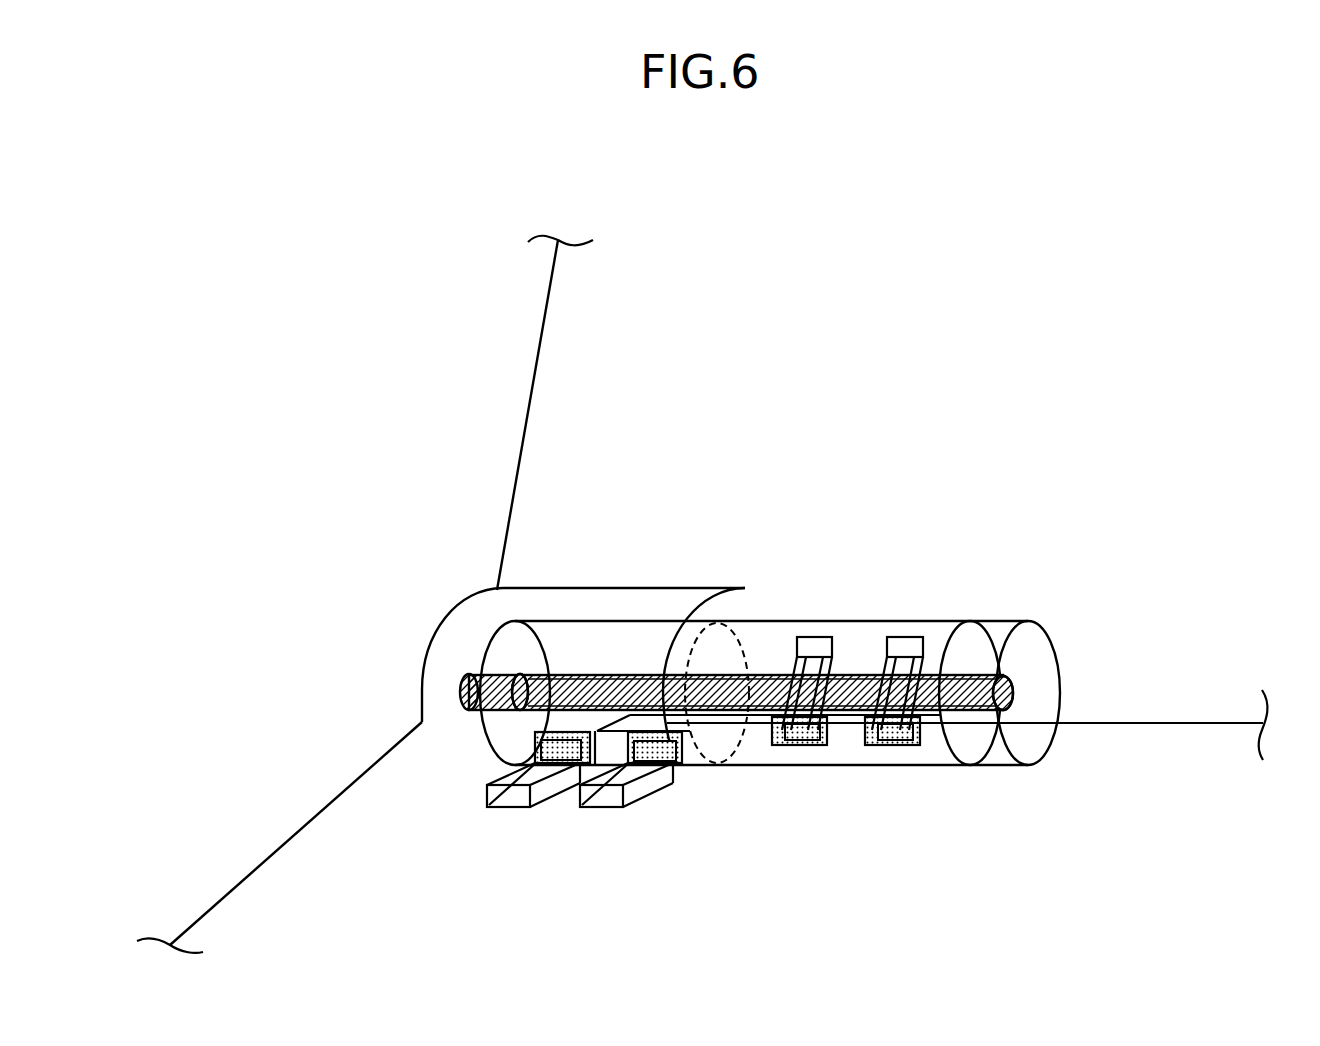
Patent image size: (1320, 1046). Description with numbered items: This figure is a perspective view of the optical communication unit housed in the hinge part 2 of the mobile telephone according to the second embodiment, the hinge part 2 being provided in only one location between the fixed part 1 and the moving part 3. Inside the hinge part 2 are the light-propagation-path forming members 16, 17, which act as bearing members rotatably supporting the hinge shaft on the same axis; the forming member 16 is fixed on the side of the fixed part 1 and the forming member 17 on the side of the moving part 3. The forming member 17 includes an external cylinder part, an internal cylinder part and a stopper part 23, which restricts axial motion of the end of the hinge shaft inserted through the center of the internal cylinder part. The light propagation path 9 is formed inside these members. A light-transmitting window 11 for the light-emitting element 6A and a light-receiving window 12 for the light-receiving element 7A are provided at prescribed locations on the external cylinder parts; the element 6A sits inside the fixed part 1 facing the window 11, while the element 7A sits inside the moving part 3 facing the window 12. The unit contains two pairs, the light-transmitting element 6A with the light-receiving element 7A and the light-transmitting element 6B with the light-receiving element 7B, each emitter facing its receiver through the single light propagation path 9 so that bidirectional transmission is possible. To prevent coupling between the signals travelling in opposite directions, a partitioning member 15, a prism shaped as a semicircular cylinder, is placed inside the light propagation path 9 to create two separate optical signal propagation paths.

The fixed part 1 is at (308, 855).
The hinge part 2 is at (400, 623).
The moving part 3 is at (565, 405).
The light-transmitting element 6A is at (598, 812).
The light-transmitting element 6B is at (912, 657).
The light-receiving element 7A is at (824, 655).
The light-receiving element 7B is at (505, 812).
The light propagation path 9 is at (718, 655).
The light-transmitting window 11 is at (670, 765).
The light-receiving window 12 is at (520, 748).
The partitioning member 15 is at (690, 755).
The light-propagation-path forming member 16 is at (520, 752).
The light-propagation-path forming member 17 is at (938, 750).
The stopper part 23 is at (1040, 657).